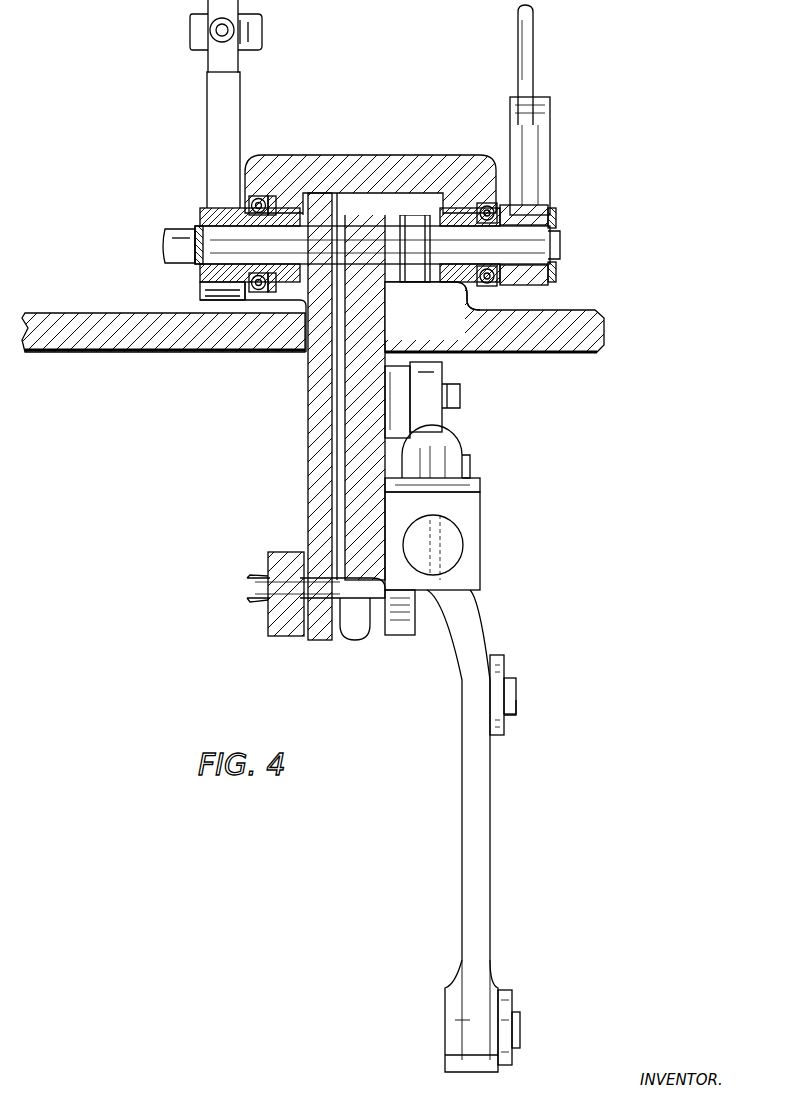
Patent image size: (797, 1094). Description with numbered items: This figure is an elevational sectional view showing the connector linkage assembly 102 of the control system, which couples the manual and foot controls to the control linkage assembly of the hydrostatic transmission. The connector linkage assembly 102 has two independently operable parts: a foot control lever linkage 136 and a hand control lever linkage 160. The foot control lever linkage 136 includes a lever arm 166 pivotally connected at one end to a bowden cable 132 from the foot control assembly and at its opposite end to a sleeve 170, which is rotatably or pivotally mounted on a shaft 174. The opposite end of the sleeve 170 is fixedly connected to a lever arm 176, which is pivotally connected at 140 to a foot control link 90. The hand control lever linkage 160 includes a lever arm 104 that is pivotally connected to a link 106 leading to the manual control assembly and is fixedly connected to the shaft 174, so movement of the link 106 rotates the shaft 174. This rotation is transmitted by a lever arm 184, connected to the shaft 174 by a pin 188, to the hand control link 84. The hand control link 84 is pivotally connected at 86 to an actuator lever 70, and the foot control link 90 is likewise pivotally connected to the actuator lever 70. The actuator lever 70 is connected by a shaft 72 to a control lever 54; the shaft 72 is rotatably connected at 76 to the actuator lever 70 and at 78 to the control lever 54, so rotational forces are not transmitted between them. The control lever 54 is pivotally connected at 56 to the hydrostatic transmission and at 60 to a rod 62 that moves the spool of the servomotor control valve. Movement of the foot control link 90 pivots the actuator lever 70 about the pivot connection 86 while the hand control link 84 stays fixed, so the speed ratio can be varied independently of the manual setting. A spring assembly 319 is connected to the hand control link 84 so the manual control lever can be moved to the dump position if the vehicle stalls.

The control lever 54 is at (460, 797).
The pivot connection 56 is at (522, 1028).
The pivot connection 60 is at (516, 697).
The rod 62 is at (516, 716).
The actuator lever 70 is at (392, 637).
The shaft 72 is at (458, 440).
The rotatable connection 76 is at (390, 455).
The rotatable connection 78 is at (470, 456).
The hand control link 84 is at (430, 428).
The pivot connection 86 is at (460, 398).
The foot control link 90 is at (335, 645).
The connector linkage assembly 102 is at (135, 110).
The lever arm 104 is at (510, 138).
The link 106 is at (518, 47).
The bowden cable 132 is at (230, 26).
The foot control lever linkage 136 is at (235, 412).
The pivot connection 140 is at (247, 594).
The hand control lever linkage 160 is at (636, 408).
The lever arm 166 is at (207, 128).
The sleeve 170 is at (200, 270).
The shaft 174 is at (178, 222).
The lever arm 176 is at (308, 389).
The lever arm 184 is at (380, 318).
The pin 188 is at (402, 292).
The spring assembly 319 is at (458, 468).